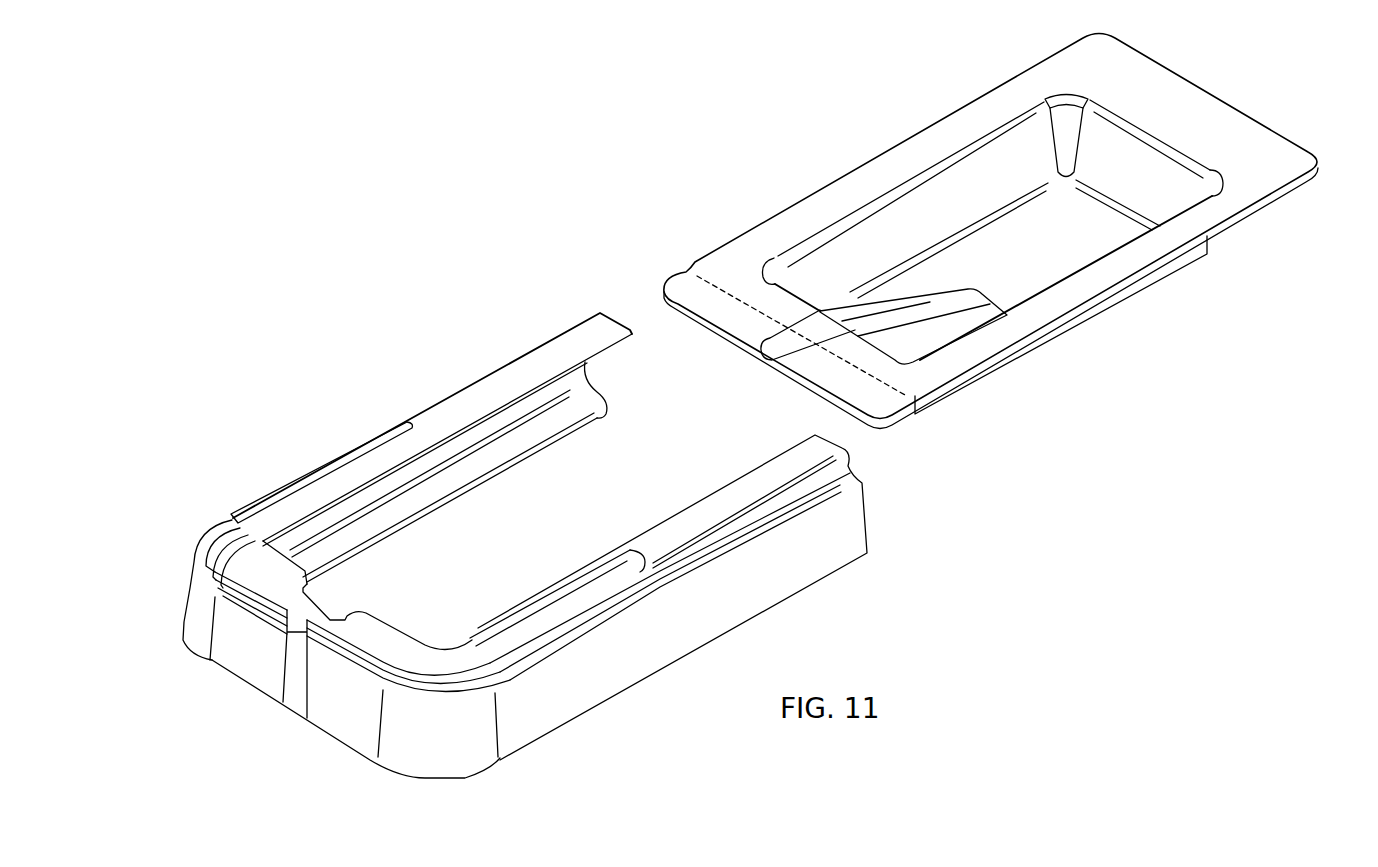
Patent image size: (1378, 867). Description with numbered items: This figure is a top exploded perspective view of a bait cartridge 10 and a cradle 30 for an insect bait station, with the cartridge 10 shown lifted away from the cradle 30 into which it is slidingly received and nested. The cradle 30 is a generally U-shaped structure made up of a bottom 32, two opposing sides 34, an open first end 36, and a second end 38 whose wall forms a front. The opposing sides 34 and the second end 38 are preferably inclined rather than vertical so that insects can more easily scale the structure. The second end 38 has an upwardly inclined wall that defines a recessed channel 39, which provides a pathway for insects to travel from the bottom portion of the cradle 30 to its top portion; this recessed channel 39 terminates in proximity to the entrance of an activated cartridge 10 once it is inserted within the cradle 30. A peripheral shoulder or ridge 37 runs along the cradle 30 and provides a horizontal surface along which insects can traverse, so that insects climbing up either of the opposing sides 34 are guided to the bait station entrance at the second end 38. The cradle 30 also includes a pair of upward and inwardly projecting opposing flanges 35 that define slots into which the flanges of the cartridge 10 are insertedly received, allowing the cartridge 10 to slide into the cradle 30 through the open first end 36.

The bait cartridge 10 is at (1243, 267).
The cradle 30 is at (417, 367).
The bottom 32 is at (548, 447).
The opposing sides 34 is at (658, 650).
The opposing flanges 35 is at (323, 462).
The open first end 36 is at (648, 482).
The peripheral shoulder or ridge 37 is at (203, 540).
The second end 38 is at (245, 668).
The recessed channel 39 is at (297, 705).